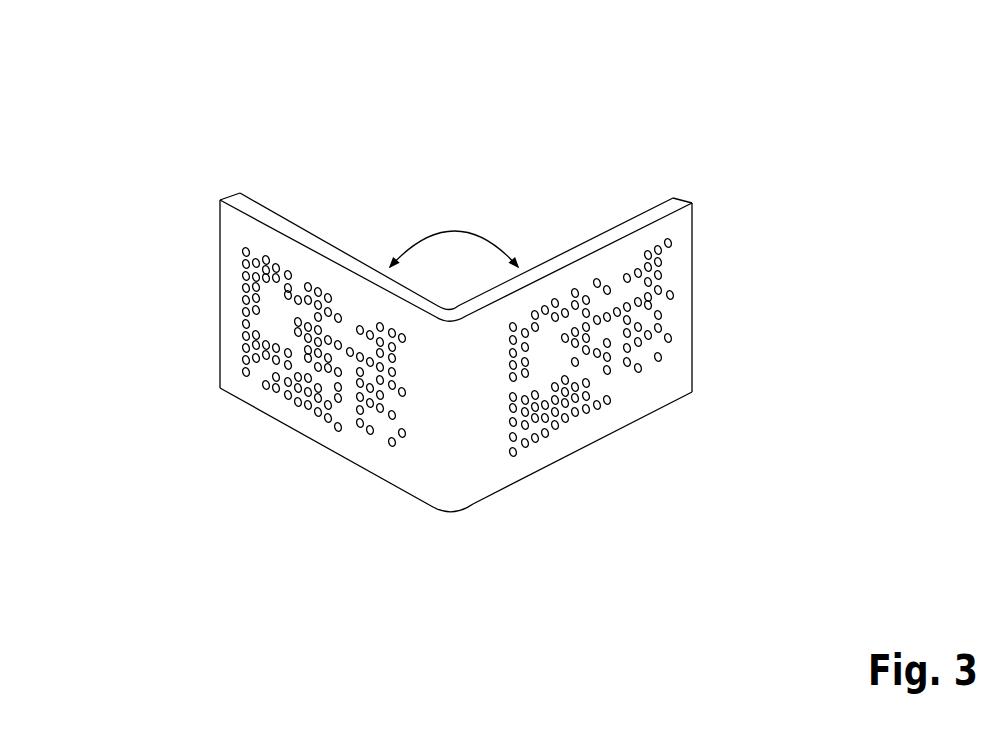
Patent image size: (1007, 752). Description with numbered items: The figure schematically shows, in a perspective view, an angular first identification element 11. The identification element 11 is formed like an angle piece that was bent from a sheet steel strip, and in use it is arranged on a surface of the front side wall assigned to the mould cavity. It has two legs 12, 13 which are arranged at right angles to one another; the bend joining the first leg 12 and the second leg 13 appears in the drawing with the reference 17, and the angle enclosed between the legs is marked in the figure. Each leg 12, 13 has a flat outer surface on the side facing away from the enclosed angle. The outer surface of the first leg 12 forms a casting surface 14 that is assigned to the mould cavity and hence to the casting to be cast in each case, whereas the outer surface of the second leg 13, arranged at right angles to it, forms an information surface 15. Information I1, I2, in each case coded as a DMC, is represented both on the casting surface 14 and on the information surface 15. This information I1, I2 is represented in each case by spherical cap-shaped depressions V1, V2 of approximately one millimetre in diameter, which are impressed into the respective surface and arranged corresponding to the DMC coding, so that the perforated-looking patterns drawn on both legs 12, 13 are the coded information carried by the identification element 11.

The identification element 11 is at (418, 513).
The first leg 12 is at (240, 203).
The second leg 13 is at (630, 227).
The casting surface 14 is at (230, 380).
The information surface 15 is at (673, 380).
The bend (fold line) 17 is at (328, 238).
The spherical cap-shaped depressions V1 is at (243, 278).
The spherical cap-shaped depressions V2 is at (653, 303).
The information I1 is at (618, 363).
The information I2 is at (298, 359).